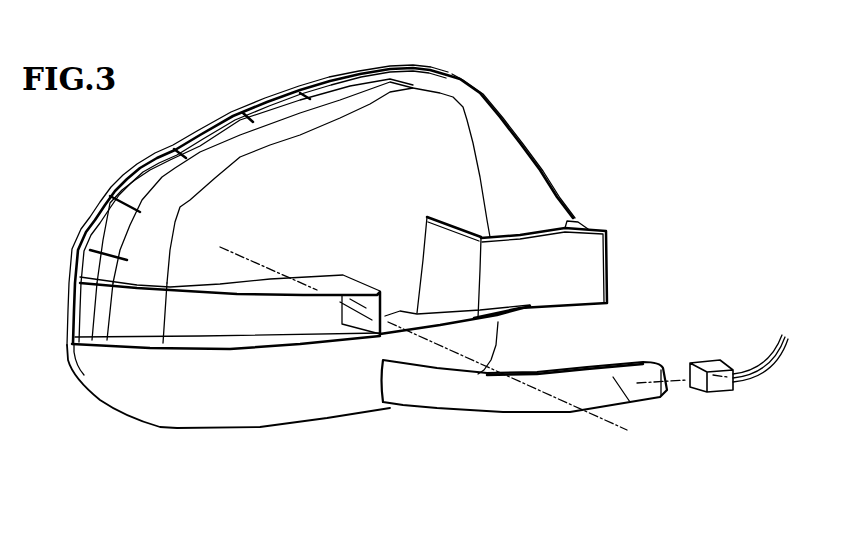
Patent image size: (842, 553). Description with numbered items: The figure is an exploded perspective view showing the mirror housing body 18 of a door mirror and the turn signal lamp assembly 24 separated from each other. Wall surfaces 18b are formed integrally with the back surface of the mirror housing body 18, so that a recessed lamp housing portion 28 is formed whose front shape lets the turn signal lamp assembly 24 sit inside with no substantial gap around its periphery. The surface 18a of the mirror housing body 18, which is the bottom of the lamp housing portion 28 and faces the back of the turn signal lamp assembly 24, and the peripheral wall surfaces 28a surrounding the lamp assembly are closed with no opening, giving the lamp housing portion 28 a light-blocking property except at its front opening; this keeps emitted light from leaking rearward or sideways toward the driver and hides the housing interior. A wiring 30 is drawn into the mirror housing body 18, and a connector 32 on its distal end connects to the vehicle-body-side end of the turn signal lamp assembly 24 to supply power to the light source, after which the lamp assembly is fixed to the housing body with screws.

The mirror housing body 18 is at (277, 126).
The surface 18a is at (281, 318).
The wall surfaces 18b is at (325, 288).
The turn signal lamp assembly 24 is at (477, 393).
The lamp housing portion 28 is at (228, 322).
The peripheral wall surfaces 28a is at (325, 333).
The wiring 30 is at (761, 353).
The connector 32 is at (703, 357).